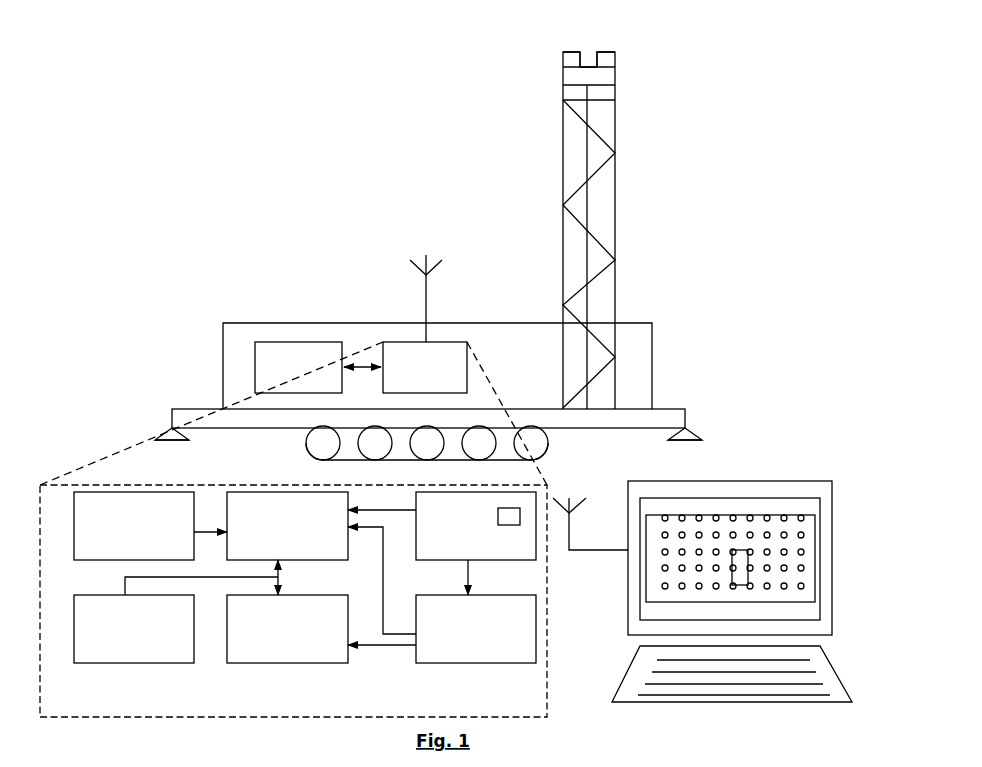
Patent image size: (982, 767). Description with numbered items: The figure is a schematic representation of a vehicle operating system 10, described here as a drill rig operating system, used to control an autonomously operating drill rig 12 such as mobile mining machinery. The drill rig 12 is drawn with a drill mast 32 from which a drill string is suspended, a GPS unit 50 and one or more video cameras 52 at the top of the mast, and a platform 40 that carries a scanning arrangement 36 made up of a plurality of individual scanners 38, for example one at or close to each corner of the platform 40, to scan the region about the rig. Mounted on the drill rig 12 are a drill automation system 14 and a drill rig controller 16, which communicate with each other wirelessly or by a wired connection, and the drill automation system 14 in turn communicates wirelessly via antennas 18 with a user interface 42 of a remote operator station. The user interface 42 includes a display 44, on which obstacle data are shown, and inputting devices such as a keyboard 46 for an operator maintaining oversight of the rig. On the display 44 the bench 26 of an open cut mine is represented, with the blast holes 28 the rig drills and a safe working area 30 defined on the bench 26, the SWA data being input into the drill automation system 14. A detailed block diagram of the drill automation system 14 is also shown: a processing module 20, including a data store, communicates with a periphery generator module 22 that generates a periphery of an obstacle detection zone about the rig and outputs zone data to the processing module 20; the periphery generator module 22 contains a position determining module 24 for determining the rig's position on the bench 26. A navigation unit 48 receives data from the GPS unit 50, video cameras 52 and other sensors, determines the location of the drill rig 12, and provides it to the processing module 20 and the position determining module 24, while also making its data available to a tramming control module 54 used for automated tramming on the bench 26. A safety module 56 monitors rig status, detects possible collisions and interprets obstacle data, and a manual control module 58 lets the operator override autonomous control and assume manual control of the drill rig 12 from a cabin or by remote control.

The vehicle operating system 10 is at (782, 335).
The drill rig 12 is at (683, 281).
The drill automation system 14 is at (28, 437).
The drill rig controller 16 is at (298, 367).
The antennas 18 is at (426, 292).
The processing module 20 is at (476, 629).
The periphery generator module 22 is at (510, 507).
The position determining module 24 is at (520, 510).
The bench 26 is at (800, 560).
The blast holes 28 is at (801, 535).
The safe working area 30 is at (815, 555).
The drill mast 32 is at (563, 148).
The scanning arrangement 36 is at (143, 423).
The scanners 38 is at (157, 438).
The platform 40 is at (187, 409).
The user interface 42 is at (743, 595).
The display 44 is at (628, 637).
The keyboard 46 is at (842, 673).
The navigation unit 48 is at (134, 526).
The GPS unit 50 is at (562, 52).
The video cameras 52 is at (617, 52).
The tramming control module 54 is at (287, 526).
The safety module 56 is at (134, 629).
The manual control module 58 is at (287, 629).